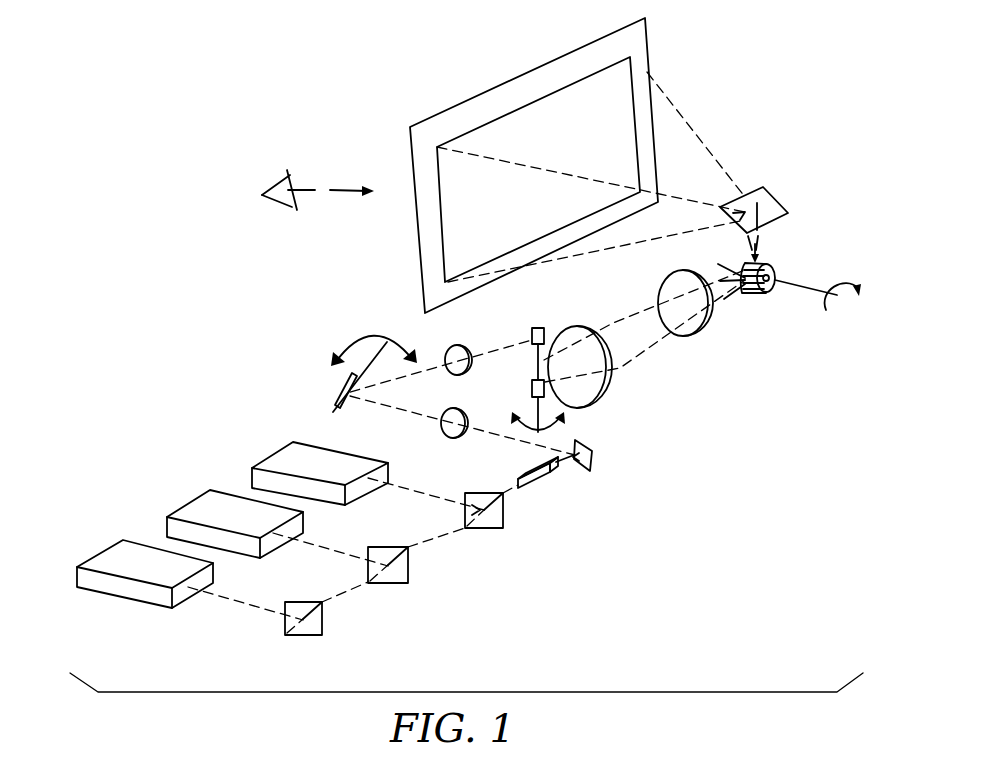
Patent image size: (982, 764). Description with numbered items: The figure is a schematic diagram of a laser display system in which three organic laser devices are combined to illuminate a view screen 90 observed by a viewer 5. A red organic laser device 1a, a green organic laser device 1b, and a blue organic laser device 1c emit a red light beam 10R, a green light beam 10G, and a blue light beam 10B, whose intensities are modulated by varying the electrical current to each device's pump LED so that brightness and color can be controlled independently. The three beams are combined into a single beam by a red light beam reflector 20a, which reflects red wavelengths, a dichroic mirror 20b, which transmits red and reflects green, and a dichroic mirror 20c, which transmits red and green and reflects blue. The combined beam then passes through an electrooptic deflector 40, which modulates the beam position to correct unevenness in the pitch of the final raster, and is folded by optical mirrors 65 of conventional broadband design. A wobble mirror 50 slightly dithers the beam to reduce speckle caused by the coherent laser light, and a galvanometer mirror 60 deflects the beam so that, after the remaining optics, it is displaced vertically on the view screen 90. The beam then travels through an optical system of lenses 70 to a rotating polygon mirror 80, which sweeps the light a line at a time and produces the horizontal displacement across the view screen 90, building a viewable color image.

The viewer 5 is at (277, 185).
The view screen 90 is at (555, 110).
The optical mirrors 65 is at (780, 195).
The rotating polygon mirror 80 is at (770, 264).
The lenses 70 is at (600, 390).
The galvanometer mirror 60 is at (532, 388).
The wobble mirror 50 is at (338, 398).
The red organic laser device 1a is at (103, 552).
The green organic laser device 1b is at (186, 503).
The blue organic laser device 1c is at (268, 455).
The red light beam 10R is at (237, 600).
The green light beam 10G is at (320, 548).
The blue light beam 10B is at (413, 492).
The red light beam reflector 20a is at (322, 632).
The dichroic mirror 20b is at (408, 580).
The dichroic mirror 20c is at (503, 522).
The electrooptic deflector 40 is at (548, 487).